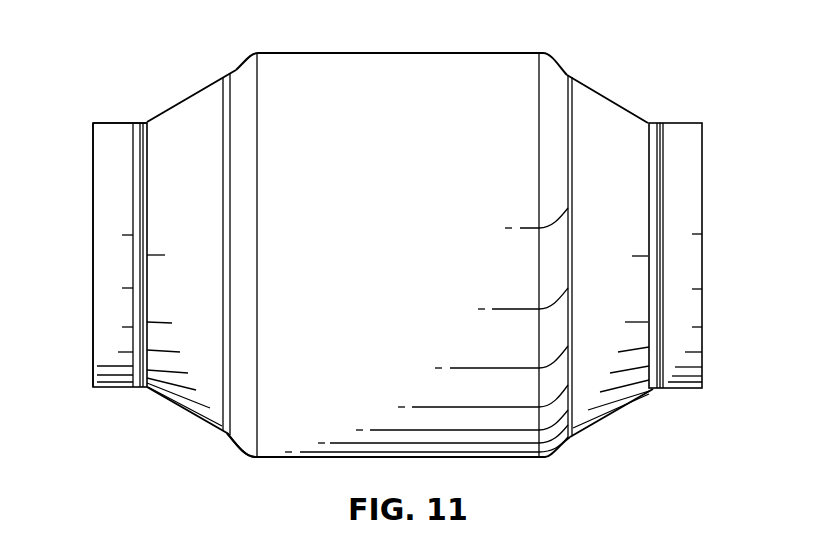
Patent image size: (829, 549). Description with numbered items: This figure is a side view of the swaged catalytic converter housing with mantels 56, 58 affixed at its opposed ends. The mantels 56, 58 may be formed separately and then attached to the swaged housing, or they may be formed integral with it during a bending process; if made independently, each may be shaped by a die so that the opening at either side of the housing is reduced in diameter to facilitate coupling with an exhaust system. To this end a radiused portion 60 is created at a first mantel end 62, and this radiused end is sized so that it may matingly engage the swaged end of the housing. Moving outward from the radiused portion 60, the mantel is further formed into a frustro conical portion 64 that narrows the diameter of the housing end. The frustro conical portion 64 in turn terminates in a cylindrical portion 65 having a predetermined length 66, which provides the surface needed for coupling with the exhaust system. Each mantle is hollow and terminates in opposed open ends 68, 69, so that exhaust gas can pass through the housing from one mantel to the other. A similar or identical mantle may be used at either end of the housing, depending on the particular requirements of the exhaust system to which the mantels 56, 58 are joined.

The mantel 56 is at (655, 58).
The mantel 58 is at (74, 50).
The radiused portion 60 is at (243, 67).
The first mantel end 62 is at (234, 462).
The frustro conical portion 64 is at (198, 107).
The cylindrical portion 65 is at (122, 371).
The predetermined length 66 is at (120, 137).
The open end 68 is at (702, 254).
The open end 69 is at (93, 234).